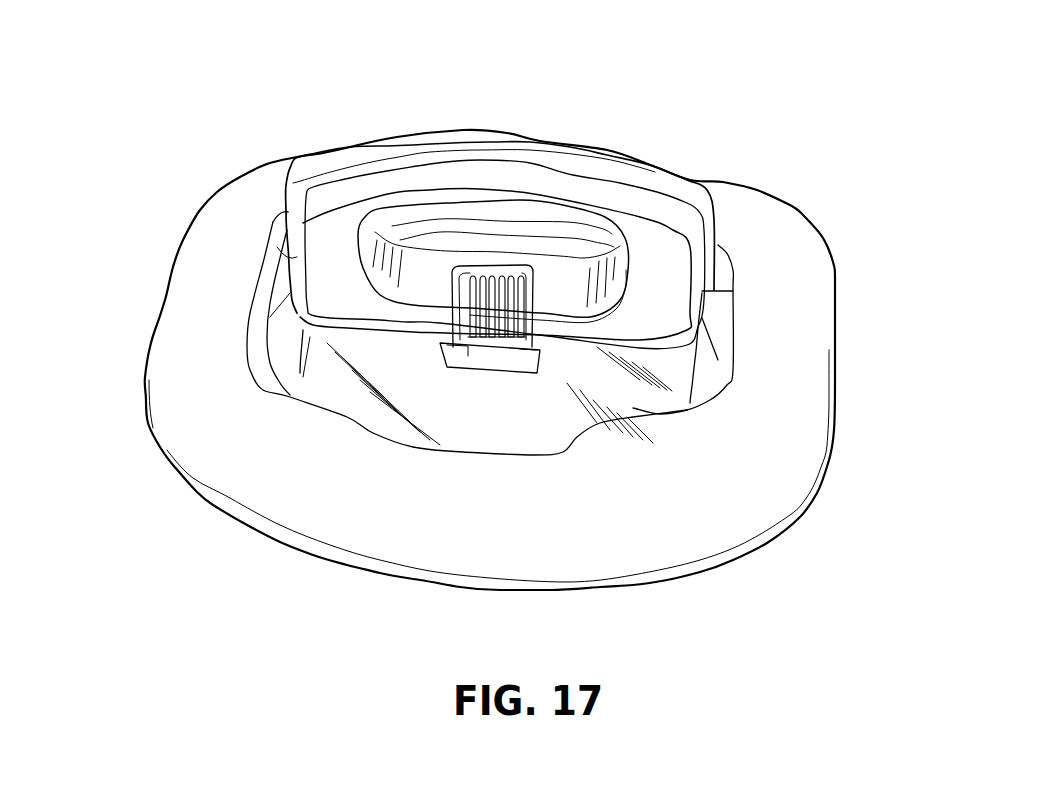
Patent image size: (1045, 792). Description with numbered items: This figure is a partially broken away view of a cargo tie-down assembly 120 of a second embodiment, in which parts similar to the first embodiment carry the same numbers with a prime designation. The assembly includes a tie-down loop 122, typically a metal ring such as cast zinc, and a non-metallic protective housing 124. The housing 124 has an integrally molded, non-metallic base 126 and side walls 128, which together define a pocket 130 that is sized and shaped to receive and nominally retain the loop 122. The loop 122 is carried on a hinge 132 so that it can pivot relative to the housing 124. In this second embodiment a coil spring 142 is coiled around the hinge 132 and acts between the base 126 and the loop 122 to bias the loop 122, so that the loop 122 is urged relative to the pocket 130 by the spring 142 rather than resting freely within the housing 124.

The cargo tie-down assembly 120 is at (486, 336).
The tie-down loop 122 is at (608, 150).
The protective housing 124 is at (803, 217).
The base 126 is at (633, 405).
The side walls 128 is at (500, 212).
The pocket 130 is at (500, 427).
The hinge 132 is at (455, 312).
The coil spring 142 is at (497, 347).